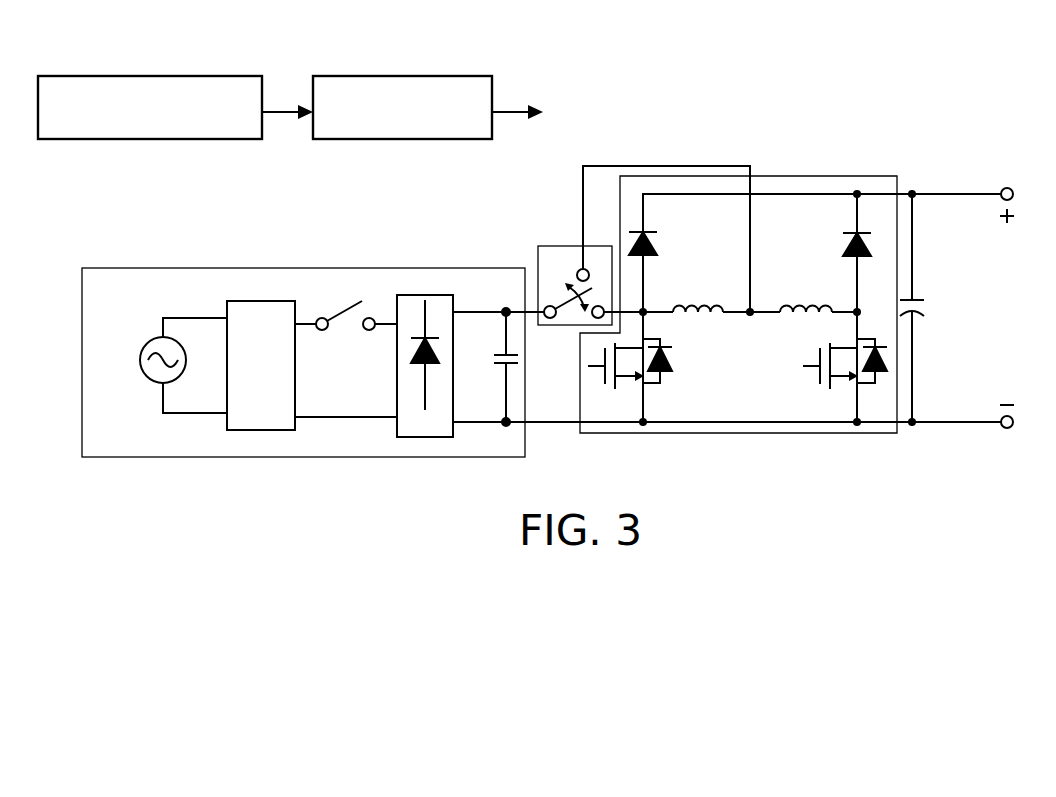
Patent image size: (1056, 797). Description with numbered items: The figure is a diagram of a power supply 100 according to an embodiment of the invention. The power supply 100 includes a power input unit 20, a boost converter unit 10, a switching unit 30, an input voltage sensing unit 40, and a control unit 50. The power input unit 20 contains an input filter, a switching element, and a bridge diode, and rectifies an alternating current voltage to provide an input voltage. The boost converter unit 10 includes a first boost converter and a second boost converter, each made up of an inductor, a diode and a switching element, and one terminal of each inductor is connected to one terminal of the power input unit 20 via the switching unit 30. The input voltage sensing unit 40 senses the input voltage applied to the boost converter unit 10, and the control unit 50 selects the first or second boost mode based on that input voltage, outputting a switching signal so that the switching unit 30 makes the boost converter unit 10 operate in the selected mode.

The power factor correction circuit 100 is at (995, 113).
The boost converter unit 10 is at (886, 176).
The power input unit 20 is at (326, 268).
The switching unit 30 is at (540, 246).
The input voltage sensing unit 40 is at (198, 76).
The control unit 50 is at (428, 76).